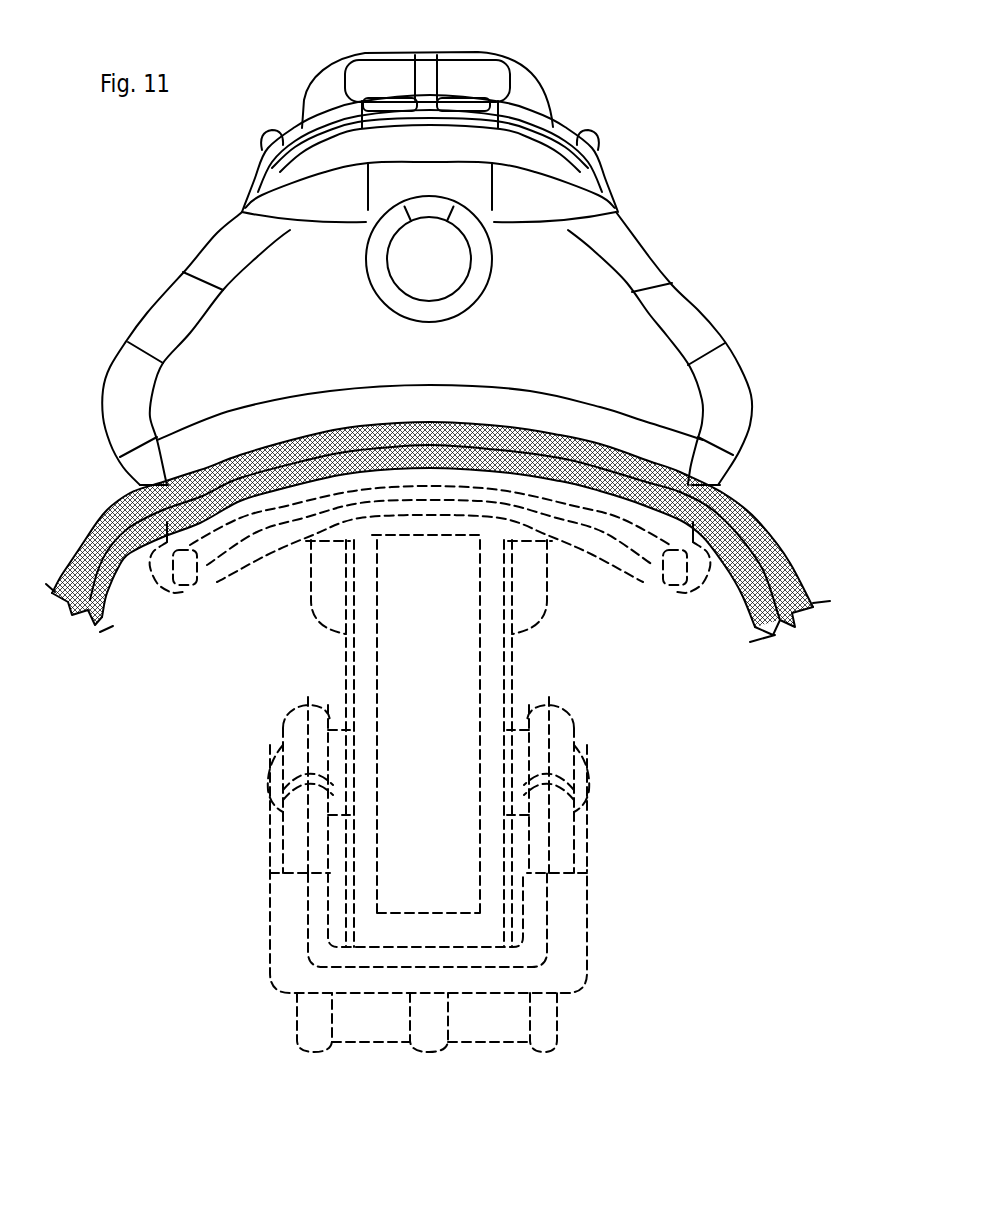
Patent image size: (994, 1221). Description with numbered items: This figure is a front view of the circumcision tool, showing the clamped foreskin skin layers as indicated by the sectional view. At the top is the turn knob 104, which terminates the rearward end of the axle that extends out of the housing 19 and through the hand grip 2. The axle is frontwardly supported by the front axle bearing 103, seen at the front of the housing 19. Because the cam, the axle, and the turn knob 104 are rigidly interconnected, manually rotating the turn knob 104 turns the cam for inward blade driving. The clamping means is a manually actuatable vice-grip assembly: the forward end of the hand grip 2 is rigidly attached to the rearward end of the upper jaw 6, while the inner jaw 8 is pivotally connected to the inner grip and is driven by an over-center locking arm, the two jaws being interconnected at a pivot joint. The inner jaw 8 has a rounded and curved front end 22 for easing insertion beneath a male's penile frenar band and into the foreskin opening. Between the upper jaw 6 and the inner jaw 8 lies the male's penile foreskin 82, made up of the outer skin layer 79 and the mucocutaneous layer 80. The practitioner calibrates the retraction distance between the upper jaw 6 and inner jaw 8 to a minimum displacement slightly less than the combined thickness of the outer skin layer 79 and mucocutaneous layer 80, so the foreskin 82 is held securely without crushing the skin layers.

The turn knob 104 is at (473, 72).
The hand grip 2 is at (523, 150).
The housing 19 is at (645, 257).
The front axle bearing 103 is at (417, 263).
The upper jaw 6 is at (157, 470).
The penile foreskin 82 is at (92, 531).
The outer skin layer 79 is at (760, 547).
The mucocutaneous layer 80 is at (110, 583).
The inner jaw 8 is at (173, 577).
The front end 22 is at (617, 543).